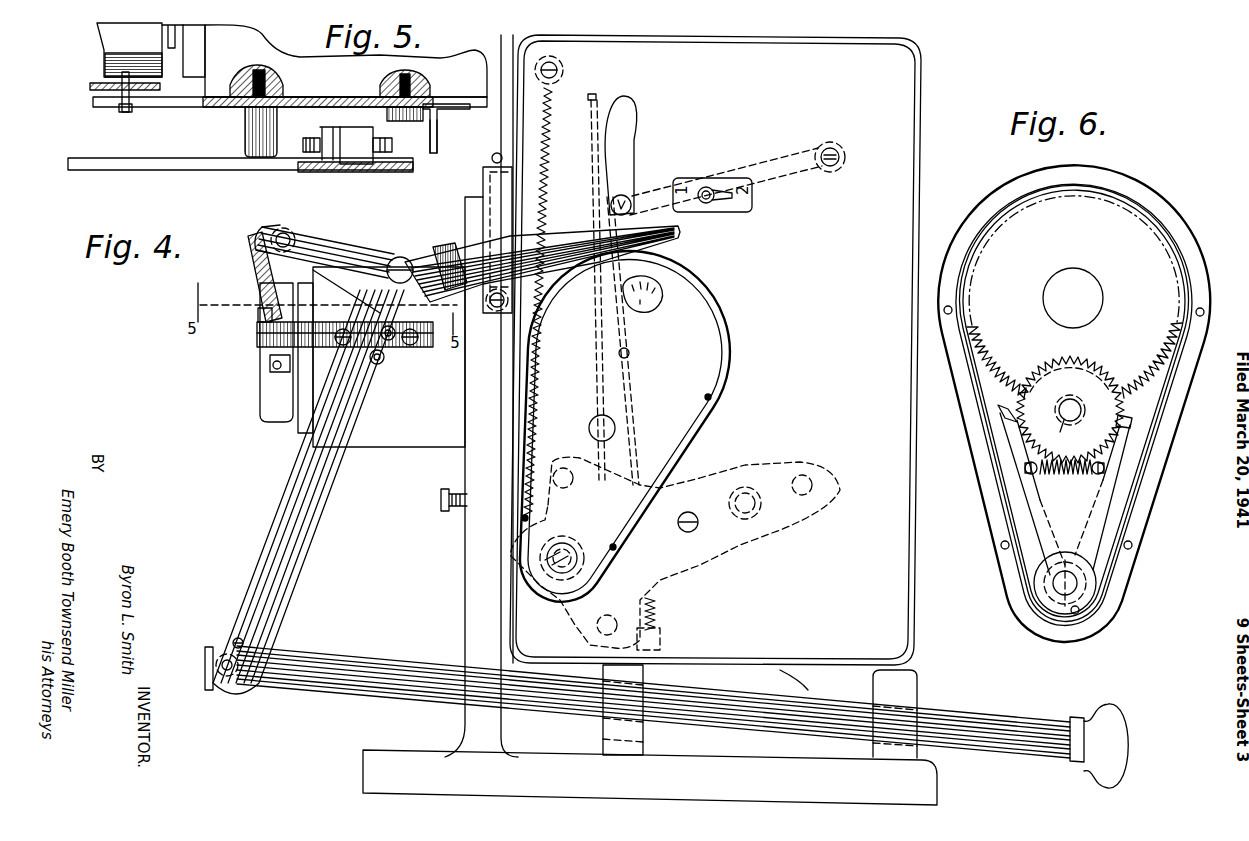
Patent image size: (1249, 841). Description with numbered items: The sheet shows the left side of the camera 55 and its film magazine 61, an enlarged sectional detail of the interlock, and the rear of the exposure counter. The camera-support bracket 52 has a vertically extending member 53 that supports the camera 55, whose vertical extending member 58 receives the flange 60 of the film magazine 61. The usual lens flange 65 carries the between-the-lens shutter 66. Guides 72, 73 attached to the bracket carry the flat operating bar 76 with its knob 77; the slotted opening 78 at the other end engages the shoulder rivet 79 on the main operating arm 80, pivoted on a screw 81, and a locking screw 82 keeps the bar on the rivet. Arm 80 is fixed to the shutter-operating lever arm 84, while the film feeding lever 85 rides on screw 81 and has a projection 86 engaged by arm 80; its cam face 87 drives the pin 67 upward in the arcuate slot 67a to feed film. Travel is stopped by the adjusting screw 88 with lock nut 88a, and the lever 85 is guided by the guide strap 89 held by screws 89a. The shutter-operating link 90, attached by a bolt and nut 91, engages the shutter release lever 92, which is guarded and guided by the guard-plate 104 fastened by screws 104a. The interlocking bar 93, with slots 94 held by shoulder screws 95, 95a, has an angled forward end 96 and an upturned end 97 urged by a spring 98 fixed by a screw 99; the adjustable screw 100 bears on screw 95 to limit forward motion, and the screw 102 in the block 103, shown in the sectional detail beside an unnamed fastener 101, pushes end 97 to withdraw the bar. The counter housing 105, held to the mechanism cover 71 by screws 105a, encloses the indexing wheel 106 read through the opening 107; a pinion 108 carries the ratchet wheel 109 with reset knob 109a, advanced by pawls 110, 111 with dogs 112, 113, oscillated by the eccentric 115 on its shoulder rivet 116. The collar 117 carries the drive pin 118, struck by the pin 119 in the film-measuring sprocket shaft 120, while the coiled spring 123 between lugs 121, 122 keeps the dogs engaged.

In FIG. 4, the camera-support bracket 52 is at (935, 786).
In FIG. 4, the vertically extending member 53 is at (790, 690).
In FIG. 5, the camera 55 is at (297, 62).
In FIG. 4, the camera 55 is at (416, 447).
In FIG. 4, the vertical extending member 58 is at (465, 385).
In FIG. 4, the flange 60 is at (501, 48).
In FIG. 4, the film magazine 61 is at (920, 62).
In FIG. 5, the lens flange 65 is at (205, 52).
In FIG. 4, the lens flange 65 is at (300, 420).
In FIG. 5, the between-the-lens shutter 66 is at (100, 33).
In FIG. 4, the between-the-lens shutter 66 is at (265, 403).
In FIG. 4, the pin 67 is at (628, 198).
In FIG. 4, the arcuate slot 67a is at (630, 118).
In FIG. 4, the mechanism cover 71 is at (885, 578).
In FIG. 4, the guide 72 is at (620, 708).
In FIG. 4, the guide 73 is at (918, 676).
In FIG. 4, the operating bar 76 is at (975, 722).
In FIG. 4, the knob 77 is at (1130, 735).
In FIG. 4, the slotted opening 78 is at (228, 680).
In FIG. 4, the shoulder rivet 79 is at (218, 658).
In FIG. 5, the main operating arm 80 is at (190, 170).
In FIG. 4, the main operating arm 80 is at (315, 492).
In FIG. 4, the screw 81 is at (405, 257).
In FIG. 4, the locking screw 82 is at (245, 641).
In FIG. 4, the shutter-operating lever arm 84 is at (345, 244).
In FIG. 4, the film feeding lever 85 is at (565, 240).
In FIG. 4, the projection 86 is at (395, 340).
In FIG. 4, the cam face 87 is at (680, 232).
In FIG. 4, the adjusting screw 88 is at (441, 500).
In FIG. 4, the lock nut 88a is at (465, 512).
In FIG. 4, the guide strap 89 is at (492, 190).
In FIG. 4, the screw 89a is at (492, 158).
In FIG. 5, the shutter-operating link 90 is at (90, 87).
In FIG. 4, the shutter-operating link 90 is at (256, 244).
In FIG. 4, the bolt and nut 91 is at (280, 232).
In FIG. 5, the shutter release lever 92 is at (124, 113).
In FIG. 4, the shutter release lever 92 is at (258, 315).
In FIG. 5, the interlocking bar 93 is at (172, 107).
In FIG. 4, the interlocking bar 93 is at (315, 322).
In FIG. 5, the slot 94 is at (245, 105).
In FIG. 4, the slot 94 is at (345, 326).
In FIG. 5, the shoulder screw 95 is at (245, 140).
In FIG. 4, the shoulder screw 95 is at (341, 346).
In FIG. 5, the shoulder screw 95a is at (420, 121).
In FIG. 4, the shoulder screw 95a is at (406, 346).
In FIG. 5, the angled forward end 96 is at (462, 111).
In FIG. 4, the angled forward end 96 is at (257, 337).
In FIG. 5, the upturned end 97 is at (435, 153).
In FIG. 4, the upturned end 97 is at (412, 350).
In FIG. 4, the spring 98 is at (385, 360).
In FIG. 4, the screw 99 is at (448, 244).
In FIG. 5, the adjustable screw 100 is at (306, 143).
In FIG. 5, the screw 101 is at (315, 162).
In FIG. 5, the screw 102 is at (382, 150).
In FIG. 5, the block 103 is at (362, 166).
In FIG. 5, the shutter-release lever guard-plate 104 is at (120, 56).
In FIG. 4, the shutter-release lever guard-plate 104 is at (270, 360).
In FIG. 4, the screw 104a is at (270, 380).
In FIG. 4, the counter housing 105 is at (700, 320).
In FIG. 6, the counter housing 105 is at (1195, 238).
In FIG. 4, the screw 105a is at (716, 398).
In FIG. 6, the indexing wheel 106 is at (1145, 325).
In FIG. 4, the opening 107 is at (650, 313).
In FIG. 6, the pinion 108 is at (1065, 419).
In FIG. 6, the ratchet wheel 109 is at (1118, 402).
In FIG. 4, the reset knob 109a is at (615, 422).
In FIG. 6, the pawl 110 is at (1110, 485).
In FIG. 6, the pawl 111 is at (1035, 505).
In FIG. 6, the dog 112 is at (1132, 425).
In FIG. 6, the dog 113 is at (1005, 420).
In FIG. 6, the eccentric 115 is at (1085, 590).
In FIG. 6, the shoulder rivet 116 is at (1053, 592).
In FIG. 6, the collar 117 is at (1080, 612).
In FIG. 4, the drive pin 118 is at (548, 556).
In FIG. 6, the drive pin 118 is at (1070, 610).
In FIG. 4, the pin 119 is at (556, 562).
In FIG. 4, the film-measuring sprocket shaft 120 is at (575, 548).
In FIG. 6, the film-measuring sprocket shaft 120 is at (1078, 580).
In FIG. 6, the upturned lug 121 is at (1105, 468).
In FIG. 6, the upturned lug 122 is at (1024, 470).
In FIG. 6, the coiled spring 123 is at (1066, 480).